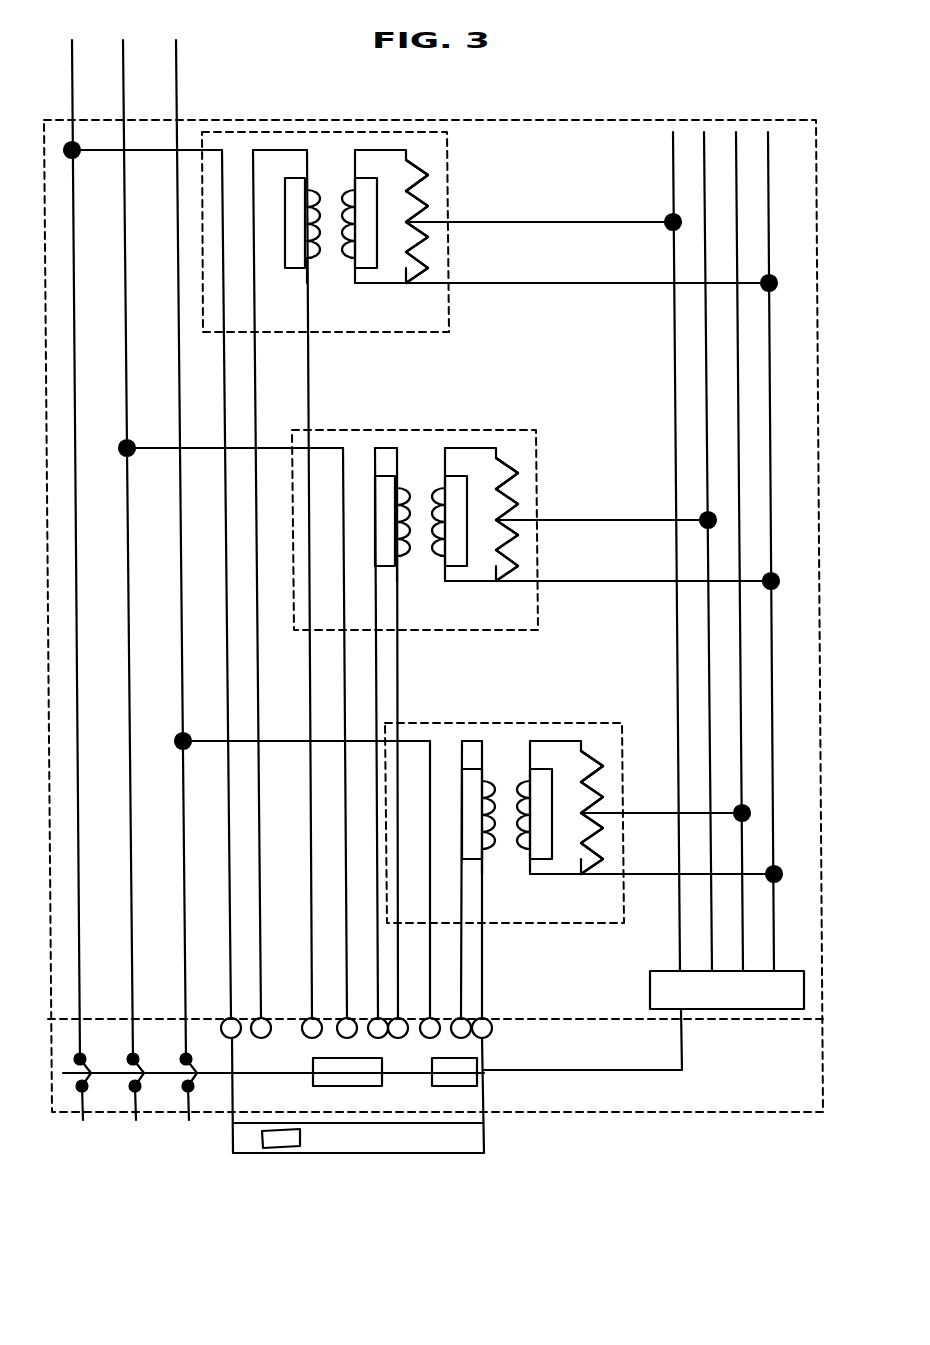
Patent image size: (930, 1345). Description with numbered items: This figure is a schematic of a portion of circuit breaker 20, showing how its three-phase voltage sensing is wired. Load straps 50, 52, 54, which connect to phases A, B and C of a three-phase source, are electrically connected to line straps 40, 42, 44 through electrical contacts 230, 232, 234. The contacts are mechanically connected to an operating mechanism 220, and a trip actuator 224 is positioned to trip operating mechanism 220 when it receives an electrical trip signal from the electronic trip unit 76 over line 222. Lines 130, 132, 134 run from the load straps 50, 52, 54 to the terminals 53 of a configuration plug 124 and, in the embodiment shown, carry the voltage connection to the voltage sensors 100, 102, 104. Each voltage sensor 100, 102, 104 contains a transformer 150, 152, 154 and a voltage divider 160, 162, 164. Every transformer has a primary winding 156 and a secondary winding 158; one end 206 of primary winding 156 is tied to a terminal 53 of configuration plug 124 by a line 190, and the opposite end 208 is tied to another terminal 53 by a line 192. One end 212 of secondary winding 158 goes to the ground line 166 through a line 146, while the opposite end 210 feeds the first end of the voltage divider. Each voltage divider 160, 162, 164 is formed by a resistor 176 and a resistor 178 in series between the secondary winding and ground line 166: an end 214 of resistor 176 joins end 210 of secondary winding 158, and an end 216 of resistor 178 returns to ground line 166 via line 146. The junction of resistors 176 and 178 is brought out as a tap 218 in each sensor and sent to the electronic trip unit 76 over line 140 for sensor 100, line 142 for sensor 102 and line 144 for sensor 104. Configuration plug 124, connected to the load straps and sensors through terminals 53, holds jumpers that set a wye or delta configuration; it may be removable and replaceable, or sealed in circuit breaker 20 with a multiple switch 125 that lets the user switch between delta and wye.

The circuit breaker 20 is at (687, 122).
The load strap 50 is at (75, 97).
The load strap 52 is at (126, 97).
The load strap 54 is at (179, 97).
The line 130 is at (148, 153).
The line 132 is at (150, 451).
The line 134 is at (280, 744).
The voltage sensor 100 is at (449, 306).
The voltage sensor 102 is at (539, 604).
The voltage sensor 104 is at (623, 901).
The transformer 150 is at (345, 153).
The transformer 152 is at (434, 450).
The transformer 154 is at (518, 745).
The primary winding 156 is at (322, 207).
The secondary winding 158 is at (362, 212).
The end of primary winding 206 is at (302, 176).
The opposite end of primary winding 208 is at (309, 257).
The opposite end of secondary winding 210 is at (356, 176).
The end of secondary winding 212 is at (355, 285).
The end of resistor 214 is at (412, 163).
The end of resistor 216 is at (406, 285).
The voltage divider 160 is at (424, 159).
The voltage divider 162 is at (547, 462).
The voltage divider 164 is at (633, 755).
The resistor 176 is at (428, 183).
The resistor 178 is at (428, 260).
The divider tap output line 218 is at (442, 222).
The line 190 is at (254, 290).
The line 192 is at (308, 302).
The line 140 is at (605, 222).
The line 142 is at (663, 518).
The line 144 is at (722, 810).
The line 146 is at (605, 283).
The ground line 166 is at (793, 374).
The terminals 53 is at (347, 1018).
The electrical contact 230 is at (100, 1062).
The electrical contact 232 is at (154, 1062).
The electrical contact 234 is at (205, 1062).
The line strap 40 is at (83, 1120).
The line strap 42 is at (136, 1120).
The line strap 44 is at (189, 1120).
The configuration plug 124 is at (484, 1133).
The multiple switch 125 is at (300, 1146).
The operating mechanism 220 is at (361, 1087).
The trip actuator 224 is at (456, 1087).
The line 222 is at (612, 1070).
The electronic trip unit 76 is at (749, 1010).